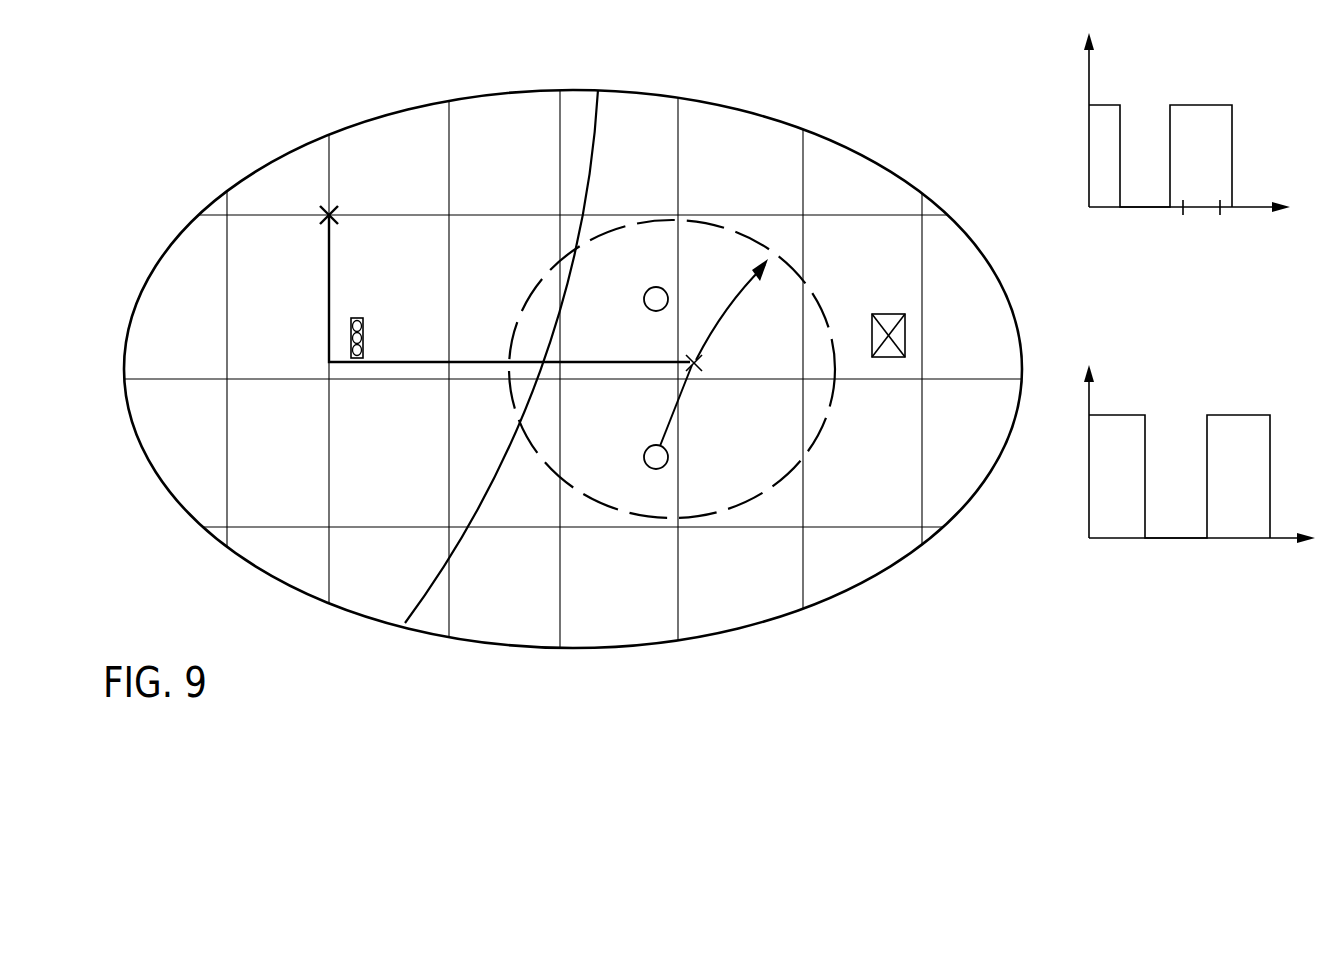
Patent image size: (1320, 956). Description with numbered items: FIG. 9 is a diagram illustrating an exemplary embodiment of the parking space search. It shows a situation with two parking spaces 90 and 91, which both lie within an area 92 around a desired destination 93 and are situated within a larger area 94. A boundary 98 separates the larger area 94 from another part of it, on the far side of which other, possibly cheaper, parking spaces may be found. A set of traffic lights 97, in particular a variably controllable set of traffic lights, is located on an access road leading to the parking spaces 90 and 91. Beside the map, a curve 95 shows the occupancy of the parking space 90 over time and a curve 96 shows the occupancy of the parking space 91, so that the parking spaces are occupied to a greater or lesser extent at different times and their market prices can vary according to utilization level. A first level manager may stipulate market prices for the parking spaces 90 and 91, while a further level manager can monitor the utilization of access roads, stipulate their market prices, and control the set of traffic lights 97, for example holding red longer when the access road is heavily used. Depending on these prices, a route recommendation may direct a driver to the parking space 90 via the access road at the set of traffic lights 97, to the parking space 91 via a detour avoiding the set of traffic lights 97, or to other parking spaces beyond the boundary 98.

The parking space 90 is at (653, 288).
The parking space 91 is at (668, 455).
The area 92 is at (814, 293).
The desired destination 93 is at (696, 362).
The larger area 94 is at (751, 113).
The curve 95 is at (1193, 105).
The curve 96 is at (1239, 415).
The set of traffic lights 97 is at (362, 318).
The boundary 98 is at (588, 160).